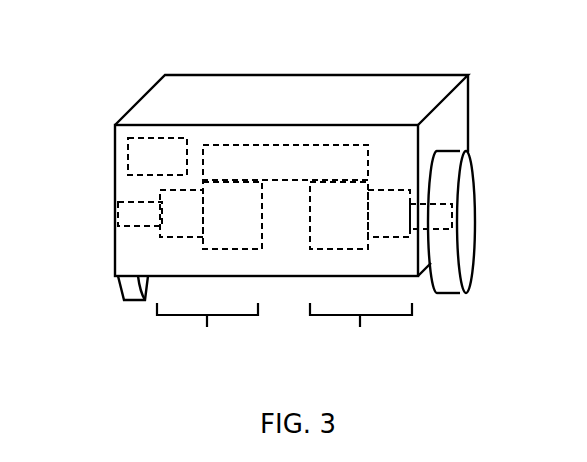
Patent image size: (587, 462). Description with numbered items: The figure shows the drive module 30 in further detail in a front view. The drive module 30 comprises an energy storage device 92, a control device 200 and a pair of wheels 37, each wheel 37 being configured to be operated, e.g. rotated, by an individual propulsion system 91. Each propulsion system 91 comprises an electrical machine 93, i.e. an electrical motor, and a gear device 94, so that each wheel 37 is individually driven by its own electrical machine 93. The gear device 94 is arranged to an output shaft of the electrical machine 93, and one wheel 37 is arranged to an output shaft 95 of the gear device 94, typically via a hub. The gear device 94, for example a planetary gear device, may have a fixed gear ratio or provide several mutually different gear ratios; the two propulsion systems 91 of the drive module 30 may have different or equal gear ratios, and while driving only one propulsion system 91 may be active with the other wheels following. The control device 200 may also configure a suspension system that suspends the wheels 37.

The drive module 30 is at (305, 84).
The wheel 37 is at (468, 218).
The propulsion system 91 is at (284, 333).
The energy storage device 92 is at (267, 170).
The electrical machine 93 is at (216, 226).
The gear device 94 is at (169, 226).
The output shaft 95 is at (130, 210).
The control device 200 is at (178, 170).